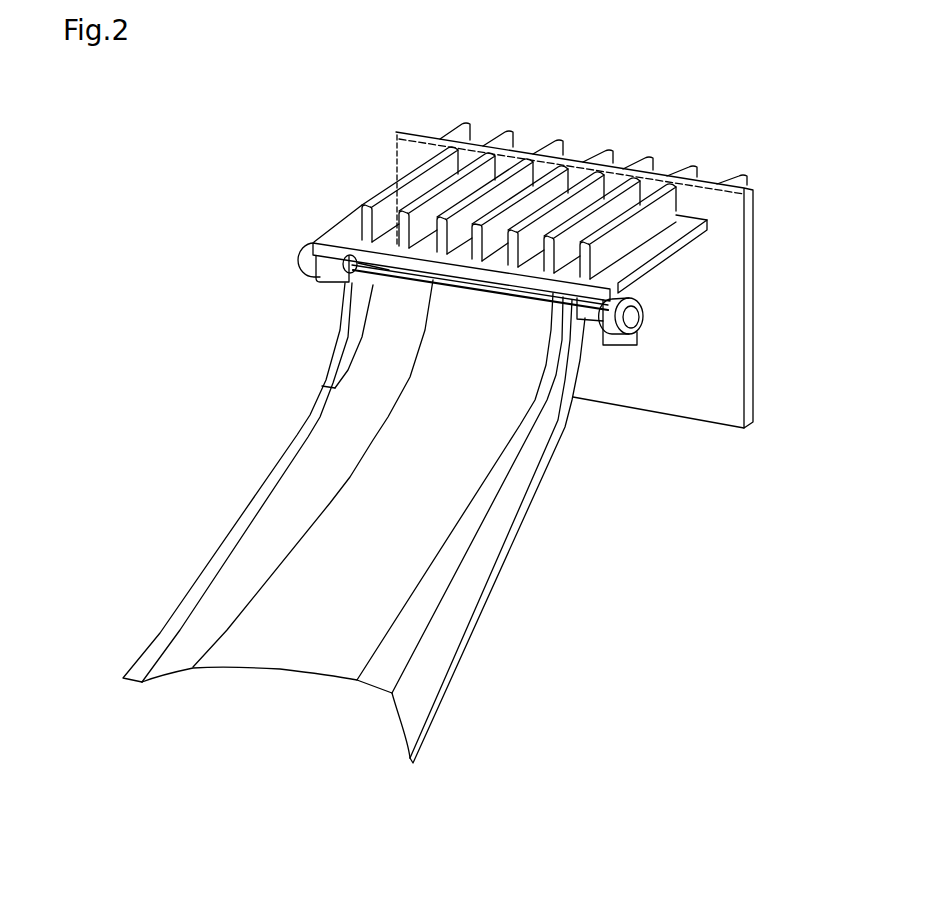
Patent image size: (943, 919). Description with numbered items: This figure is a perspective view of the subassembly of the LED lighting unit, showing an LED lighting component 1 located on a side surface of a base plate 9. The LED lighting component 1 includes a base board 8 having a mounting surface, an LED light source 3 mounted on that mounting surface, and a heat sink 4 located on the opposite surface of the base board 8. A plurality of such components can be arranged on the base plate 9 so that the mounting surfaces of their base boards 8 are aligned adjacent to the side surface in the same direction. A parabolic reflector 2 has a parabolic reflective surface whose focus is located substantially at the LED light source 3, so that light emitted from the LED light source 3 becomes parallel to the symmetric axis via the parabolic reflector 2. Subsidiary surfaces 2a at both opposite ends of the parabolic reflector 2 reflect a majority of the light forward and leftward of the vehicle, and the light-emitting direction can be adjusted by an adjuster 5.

The LED lighting component 1 is at (779, 180).
The parabolic reflector 2 is at (308, 633).
The subsidiary surfaces 2a is at (330, 448).
The LED light source 3 is at (489, 297).
The heat sink 4 is at (545, 177).
The adjuster 5 is at (633, 312).
The base board 8 is at (530, 290).
The base plate 9 is at (707, 292).